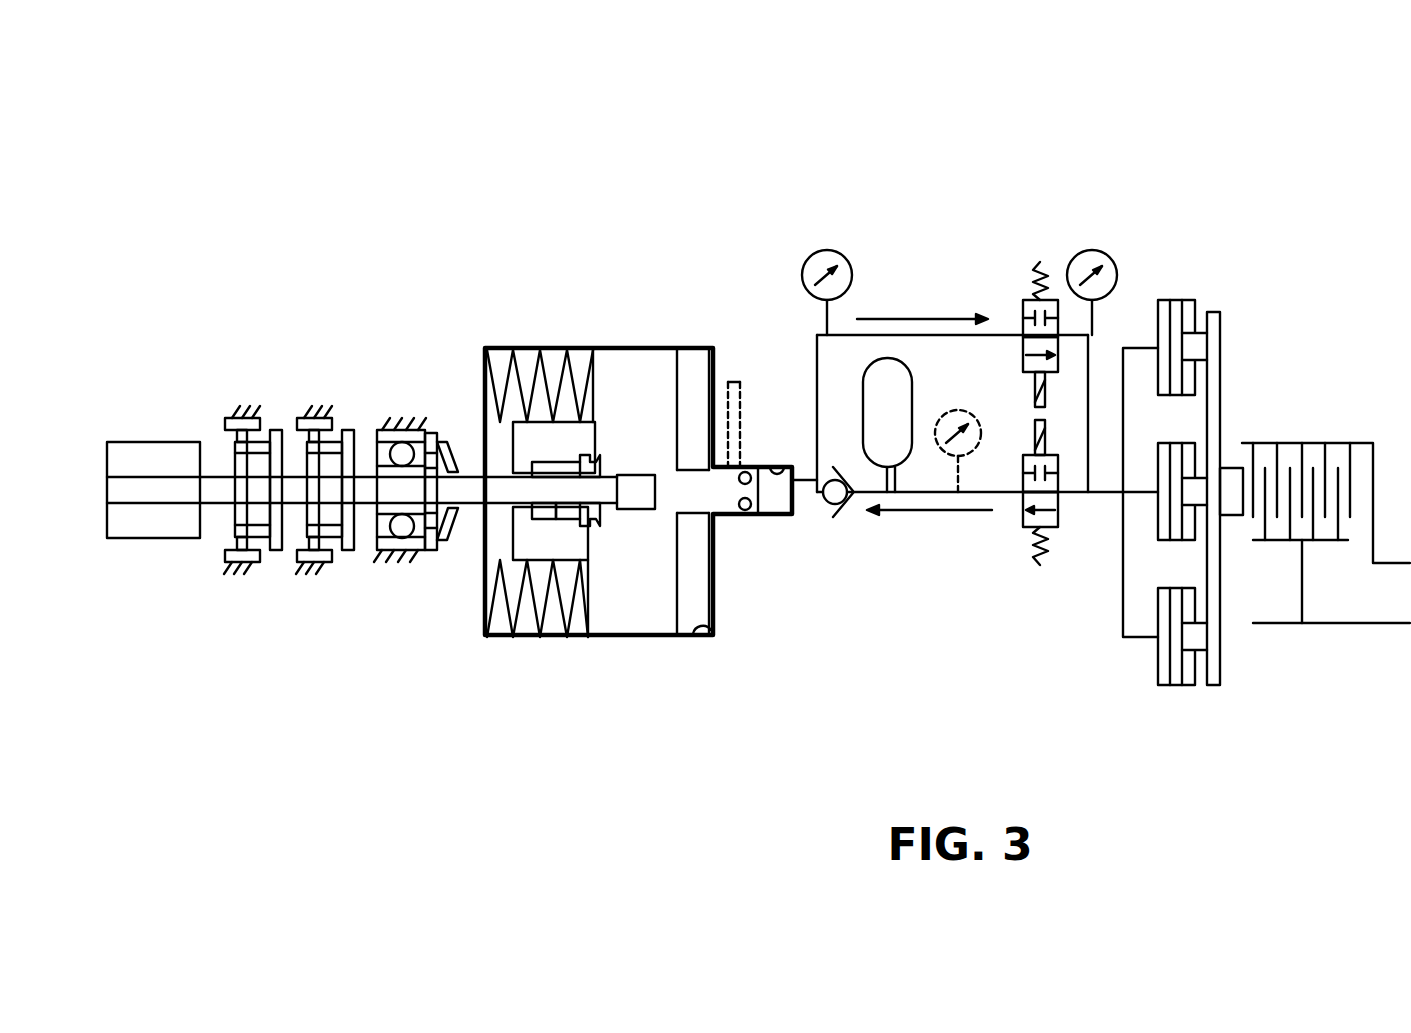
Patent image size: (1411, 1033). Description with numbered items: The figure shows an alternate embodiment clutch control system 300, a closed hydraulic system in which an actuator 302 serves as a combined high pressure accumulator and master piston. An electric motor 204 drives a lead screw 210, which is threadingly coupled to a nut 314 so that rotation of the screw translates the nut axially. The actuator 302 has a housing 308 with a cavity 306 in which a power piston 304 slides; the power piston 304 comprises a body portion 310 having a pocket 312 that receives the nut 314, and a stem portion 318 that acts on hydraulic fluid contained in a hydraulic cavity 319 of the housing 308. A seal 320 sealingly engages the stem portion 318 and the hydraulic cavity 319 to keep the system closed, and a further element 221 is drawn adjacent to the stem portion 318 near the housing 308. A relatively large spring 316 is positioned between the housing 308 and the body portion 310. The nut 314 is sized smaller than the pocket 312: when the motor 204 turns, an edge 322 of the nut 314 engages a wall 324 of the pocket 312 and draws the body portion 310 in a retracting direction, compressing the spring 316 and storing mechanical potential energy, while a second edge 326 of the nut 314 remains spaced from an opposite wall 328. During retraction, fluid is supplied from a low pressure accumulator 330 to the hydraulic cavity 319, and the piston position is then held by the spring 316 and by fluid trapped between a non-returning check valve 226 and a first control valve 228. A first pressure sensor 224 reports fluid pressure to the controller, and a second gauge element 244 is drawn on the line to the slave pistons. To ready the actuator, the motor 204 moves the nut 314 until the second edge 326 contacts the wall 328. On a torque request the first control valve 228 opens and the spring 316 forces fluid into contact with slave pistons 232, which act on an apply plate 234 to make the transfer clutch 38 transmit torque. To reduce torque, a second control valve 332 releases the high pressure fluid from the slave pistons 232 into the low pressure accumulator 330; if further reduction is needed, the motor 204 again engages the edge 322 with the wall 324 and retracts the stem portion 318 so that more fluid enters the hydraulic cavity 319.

The transfer clutch 38 is at (1312, 443).
The electric motor 204 is at (130, 452).
The lead screw 210 is at (475, 477).
The position sensor 221 is at (735, 380).
The first pressure sensor 224 is at (815, 264).
The non-returning check valve 226 is at (838, 516).
The first control valve 228 is at (1026, 312).
The slave pistons 232 is at (1177, 312).
The apply plate 234 is at (1215, 680).
The pressure gauge 244 is at (1113, 268).
The clutch control system 300 is at (632, 245).
The actuator 302 is at (582, 675).
The power piston 304 is at (657, 612).
The cavity 306 is at (714, 626).
The housing 308 is at (715, 590).
The body portion 310 is at (632, 362).
The pocket 312 is at (590, 466).
The nut 314 is at (545, 519).
The spring 316 is at (532, 516).
The stem portion 318 is at (700, 480).
The hydraulic cavity 319 is at (779, 466).
The seal 320 is at (745, 468).
The edge 322 is at (513, 508).
The wall 324 is at (547, 456).
The second edge 326 is at (583, 514).
The wall 328 is at (605, 508).
The low pressure accumulator 330 is at (893, 470).
The second control valve 332 is at (1026, 530).